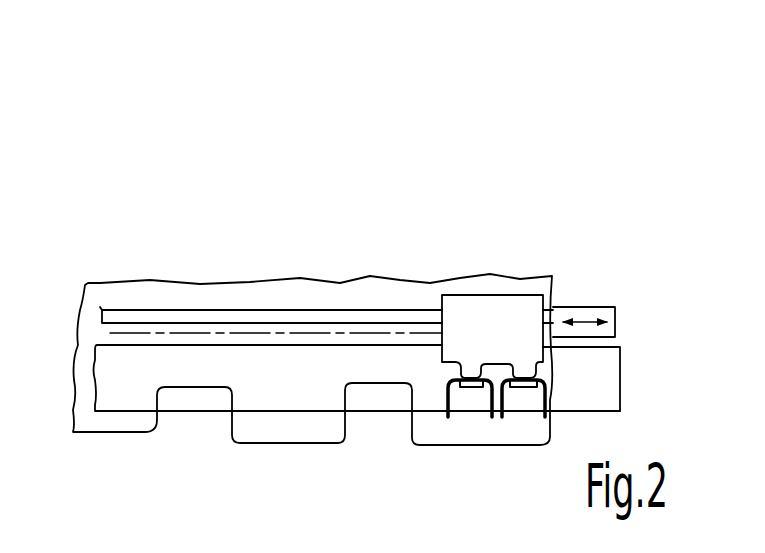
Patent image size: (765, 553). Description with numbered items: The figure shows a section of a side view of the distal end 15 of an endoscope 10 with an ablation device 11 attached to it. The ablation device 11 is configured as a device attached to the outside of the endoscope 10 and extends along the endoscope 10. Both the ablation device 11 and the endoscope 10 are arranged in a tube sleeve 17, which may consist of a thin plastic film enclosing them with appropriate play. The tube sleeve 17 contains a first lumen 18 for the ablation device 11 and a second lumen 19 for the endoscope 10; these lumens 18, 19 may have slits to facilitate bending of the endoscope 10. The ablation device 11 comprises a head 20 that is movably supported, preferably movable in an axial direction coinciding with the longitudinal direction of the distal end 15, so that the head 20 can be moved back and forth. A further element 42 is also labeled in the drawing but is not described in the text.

The endoscope 10 is at (430, 108).
The ablation device 11 is at (572, 278).
The distal end 15 is at (357, 239).
The tube sleeve 17 is at (432, 278).
The first lumen 18 is at (185, 300).
The second lumen 19 is at (95, 422).
The head 20 is at (583, 306).
The connecting line 42 is at (257, 0).